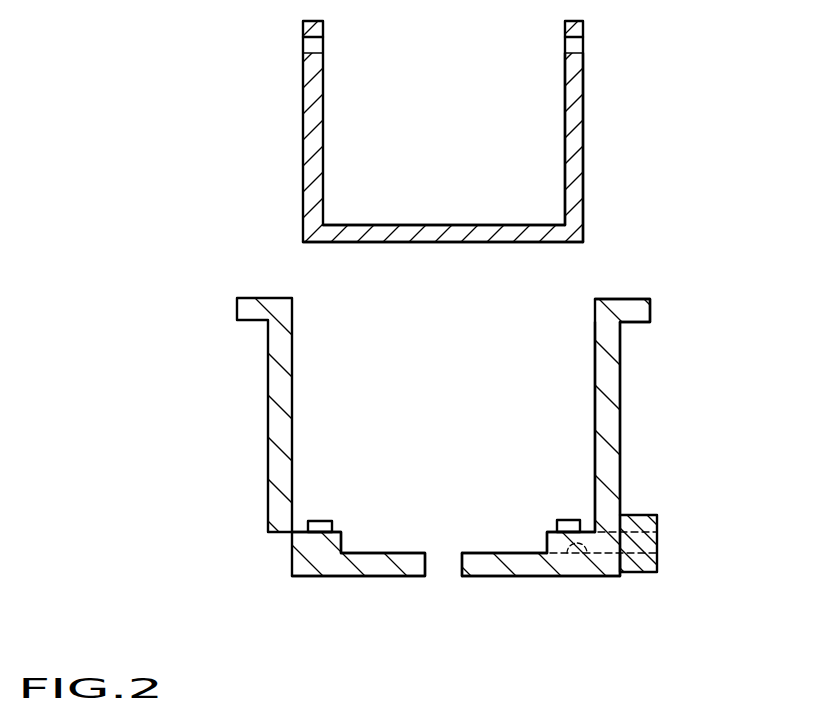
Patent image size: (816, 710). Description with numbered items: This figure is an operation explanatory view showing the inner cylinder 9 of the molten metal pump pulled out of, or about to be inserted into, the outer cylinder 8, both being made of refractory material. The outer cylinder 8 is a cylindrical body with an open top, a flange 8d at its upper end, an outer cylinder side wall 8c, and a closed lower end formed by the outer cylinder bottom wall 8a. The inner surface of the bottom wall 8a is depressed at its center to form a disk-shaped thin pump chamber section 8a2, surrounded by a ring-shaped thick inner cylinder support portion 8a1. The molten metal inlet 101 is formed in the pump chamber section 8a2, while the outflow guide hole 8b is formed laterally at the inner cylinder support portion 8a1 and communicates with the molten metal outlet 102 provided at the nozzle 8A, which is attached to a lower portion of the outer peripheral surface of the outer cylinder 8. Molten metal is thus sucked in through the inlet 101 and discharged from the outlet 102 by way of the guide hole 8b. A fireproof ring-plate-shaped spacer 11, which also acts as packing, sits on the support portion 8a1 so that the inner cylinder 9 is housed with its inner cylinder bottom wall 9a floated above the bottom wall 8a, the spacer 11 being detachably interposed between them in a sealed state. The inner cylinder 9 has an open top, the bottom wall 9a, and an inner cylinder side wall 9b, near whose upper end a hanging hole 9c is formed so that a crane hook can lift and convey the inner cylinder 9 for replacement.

The outer cylinder 8 is at (628, 378).
The outer cylinder bottom wall 8a is at (402, 566).
The inner cylinder support portion 8a1 is at (333, 542).
The pump chamber section 8a2 is at (518, 565).
The outflow guide hole 8b is at (568, 557).
The outer cylinder side wall 8c is at (610, 461).
The flange 8d is at (652, 310).
The nozzle 8A is at (634, 577).
The inner cylinder 9 is at (593, 115).
The inner cylinder bottom wall 9a is at (428, 232).
The inner cylinder side wall 9b is at (573, 100).
The hanging hole 9c is at (312, 45).
The spacer 11 is at (318, 524).
The molten metal inlet 101 is at (461, 568).
The molten metal outlet 102 is at (658, 543).